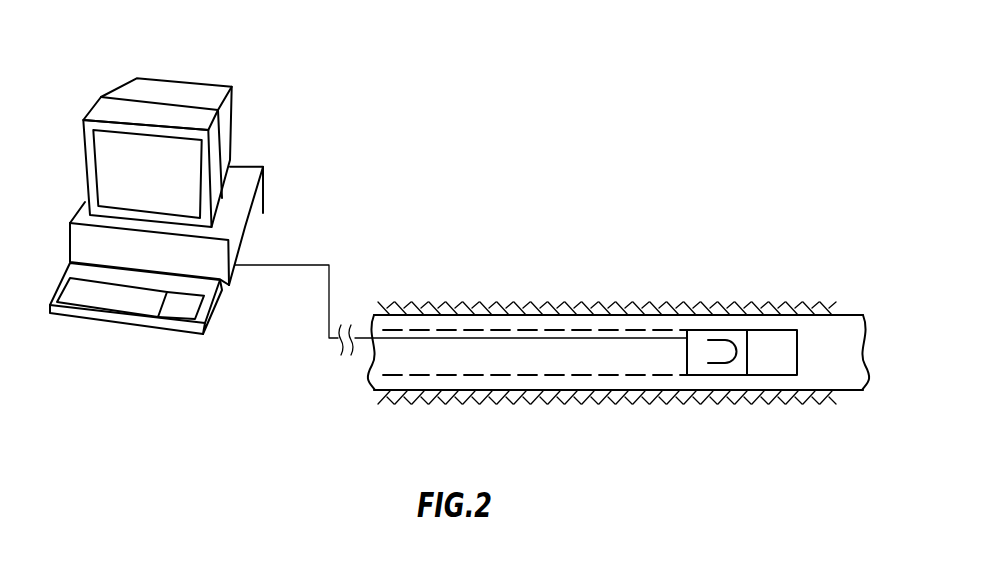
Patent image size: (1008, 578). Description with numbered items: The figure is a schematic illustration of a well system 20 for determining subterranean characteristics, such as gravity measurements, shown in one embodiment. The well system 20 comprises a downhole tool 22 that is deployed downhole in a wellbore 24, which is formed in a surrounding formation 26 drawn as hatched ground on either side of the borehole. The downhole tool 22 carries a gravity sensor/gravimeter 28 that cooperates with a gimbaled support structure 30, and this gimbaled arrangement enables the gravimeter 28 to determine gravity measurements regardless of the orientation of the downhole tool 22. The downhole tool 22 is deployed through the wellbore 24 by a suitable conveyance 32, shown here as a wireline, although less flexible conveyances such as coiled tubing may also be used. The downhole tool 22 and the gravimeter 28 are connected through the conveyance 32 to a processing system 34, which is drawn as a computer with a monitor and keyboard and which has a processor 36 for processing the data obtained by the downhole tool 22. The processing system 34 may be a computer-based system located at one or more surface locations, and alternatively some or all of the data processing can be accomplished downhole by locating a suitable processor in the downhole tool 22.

The well system 20 is at (623, 213).
The downhole tool 22 is at (787, 322).
The wellbore 24 is at (592, 319).
The formation 26 is at (578, 460).
The gravity sensor/gravimeter 28 is at (697, 327).
The gimbaled support structure 30 is at (723, 363).
The conveyance 32 is at (417, 375).
The processing system 34 is at (260, 140).
The processor 36 is at (253, 213).